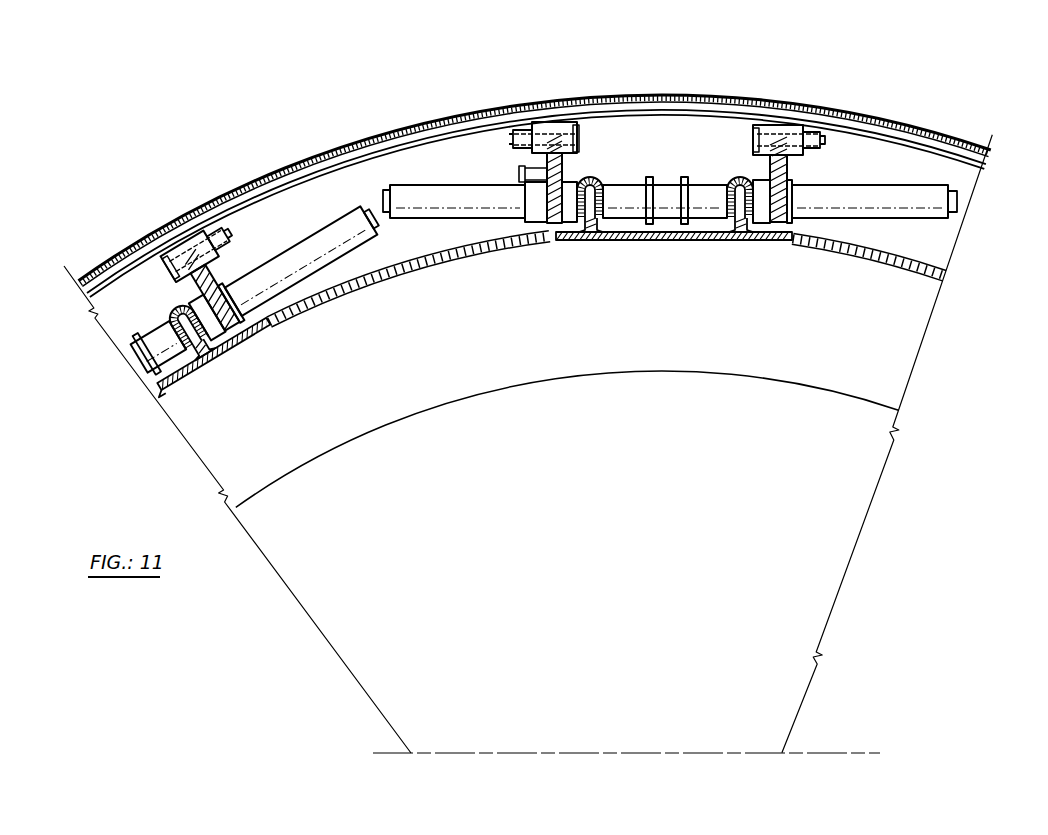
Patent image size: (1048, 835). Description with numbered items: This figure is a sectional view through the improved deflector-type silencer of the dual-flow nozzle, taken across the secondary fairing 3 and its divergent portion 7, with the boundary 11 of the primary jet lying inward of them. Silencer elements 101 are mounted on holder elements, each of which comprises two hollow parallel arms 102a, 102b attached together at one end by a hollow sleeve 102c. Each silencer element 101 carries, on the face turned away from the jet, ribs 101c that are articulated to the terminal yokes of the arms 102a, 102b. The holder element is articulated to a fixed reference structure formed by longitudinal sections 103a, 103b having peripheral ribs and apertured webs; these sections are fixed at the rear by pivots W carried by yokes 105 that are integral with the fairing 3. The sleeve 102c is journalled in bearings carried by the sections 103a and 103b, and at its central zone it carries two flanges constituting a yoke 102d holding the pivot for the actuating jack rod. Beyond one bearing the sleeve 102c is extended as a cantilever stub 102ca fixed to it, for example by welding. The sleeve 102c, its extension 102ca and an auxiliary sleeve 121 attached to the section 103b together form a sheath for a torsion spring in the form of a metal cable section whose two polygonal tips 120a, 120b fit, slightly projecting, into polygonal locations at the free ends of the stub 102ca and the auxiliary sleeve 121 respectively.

The secondary fairing 3 is at (371, 134).
The divergent portion 7 is at (399, 286).
The boundary of the primary jet 11 is at (714, 370).
The silencer element 101 is at (695, 242).
The rib 101c is at (592, 238).
The hollow arm 102a is at (740, 176).
The hollow arm 102b is at (592, 177).
The hollow sleeve 102c is at (715, 184).
The cantilever stub 102ca is at (880, 207).
The yoke 102d is at (684, 177).
The longitudinal section 103a is at (783, 124).
The longitudinal section 103b is at (554, 123).
The yoke 105 is at (569, 124).
The polygonal tip 120a is at (960, 203).
The polygonal tip 120b is at (374, 198).
The auxiliary sleeve 121 is at (447, 198).
The pivot W is at (789, 153).